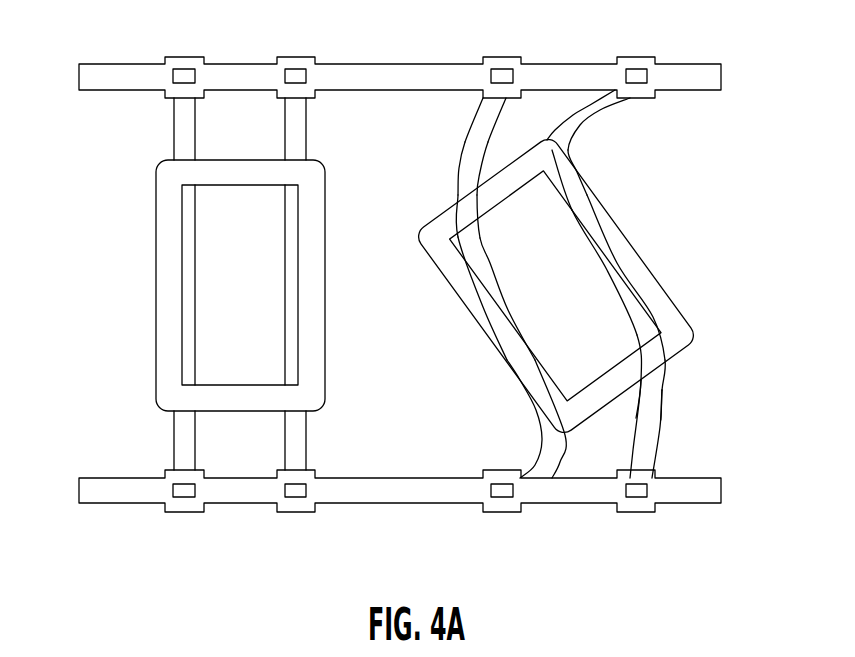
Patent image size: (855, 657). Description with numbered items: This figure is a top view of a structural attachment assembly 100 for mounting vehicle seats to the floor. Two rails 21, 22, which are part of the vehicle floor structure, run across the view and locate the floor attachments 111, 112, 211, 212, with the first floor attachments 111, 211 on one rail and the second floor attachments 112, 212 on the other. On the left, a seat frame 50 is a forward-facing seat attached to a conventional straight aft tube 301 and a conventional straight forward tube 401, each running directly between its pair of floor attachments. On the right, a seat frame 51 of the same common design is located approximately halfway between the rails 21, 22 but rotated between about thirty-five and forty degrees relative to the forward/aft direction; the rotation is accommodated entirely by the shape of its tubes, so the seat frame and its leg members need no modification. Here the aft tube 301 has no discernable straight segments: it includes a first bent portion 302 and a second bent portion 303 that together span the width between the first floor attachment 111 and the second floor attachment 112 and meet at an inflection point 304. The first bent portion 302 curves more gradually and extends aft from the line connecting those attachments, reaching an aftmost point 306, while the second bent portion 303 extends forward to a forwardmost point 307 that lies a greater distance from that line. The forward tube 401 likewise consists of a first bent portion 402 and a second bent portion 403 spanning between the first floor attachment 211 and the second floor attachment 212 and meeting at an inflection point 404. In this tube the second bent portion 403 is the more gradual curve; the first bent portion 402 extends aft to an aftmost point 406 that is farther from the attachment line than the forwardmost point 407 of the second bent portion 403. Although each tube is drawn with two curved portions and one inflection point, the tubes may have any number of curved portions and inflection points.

The structural attachment assembly 100 is at (64, 140).
The rail 21 is at (92, 79).
The rail 22 is at (98, 495).
The first floor attachment 111 is at (184, 73).
The first floor attachment 211 is at (298, 73).
The second floor attachment 112 is at (184, 493).
The second floor attachment 212 is at (288, 493).
The seat frame 50 is at (159, 247).
The seat frame 51 is at (452, 270).
The aft tube 301 is at (183, 126).
The first bent portion 302 is at (466, 163).
The second bent portion 303 is at (541, 465).
The inflection point 304 is at (512, 312).
The aftmost point 306 is at (463, 237).
The forwardmost point 307 is at (563, 442).
The forward tube 401 is at (294, 442).
The first bent portion 402 is at (585, 105).
The second bent portion 403 is at (650, 415).
The inflection point 404 is at (620, 282).
The aftmost point 406 is at (548, 135).
The forwardmost point 407 is at (653, 380).